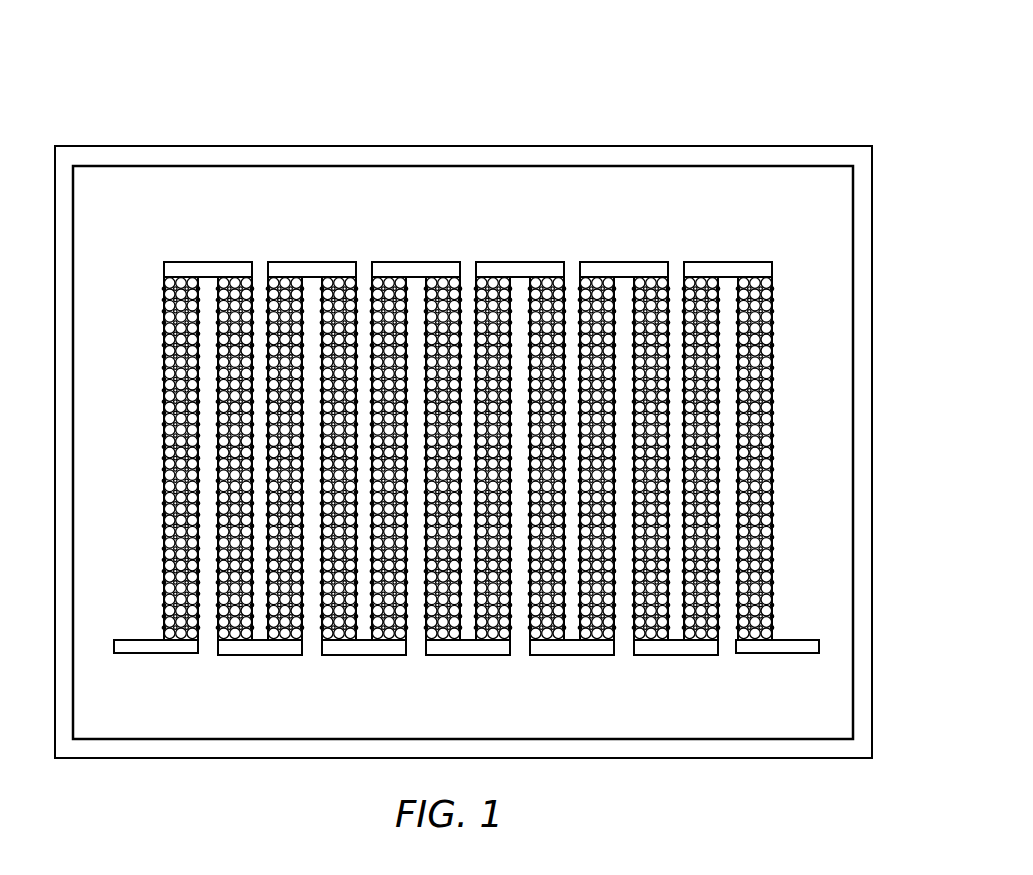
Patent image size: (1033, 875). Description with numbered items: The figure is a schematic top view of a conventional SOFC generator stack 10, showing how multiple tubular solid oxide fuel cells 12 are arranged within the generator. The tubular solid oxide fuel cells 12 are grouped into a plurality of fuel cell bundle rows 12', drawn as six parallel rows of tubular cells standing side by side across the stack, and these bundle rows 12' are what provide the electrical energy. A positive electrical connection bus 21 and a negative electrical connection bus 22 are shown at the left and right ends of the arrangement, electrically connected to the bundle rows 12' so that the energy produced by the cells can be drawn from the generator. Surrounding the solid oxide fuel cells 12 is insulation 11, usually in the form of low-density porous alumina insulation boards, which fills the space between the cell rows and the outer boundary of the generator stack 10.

The SOFC generator stack 10 is at (670, 104).
The insulation 11 is at (312, 292).
The tubular solid oxide fuel cells 12 is at (492, 458).
The fuel cell bundle rows 12' is at (624, 421).
The positive electrical connection bus 21 is at (137, 646).
The negative electrical connection bus 22 is at (787, 645).